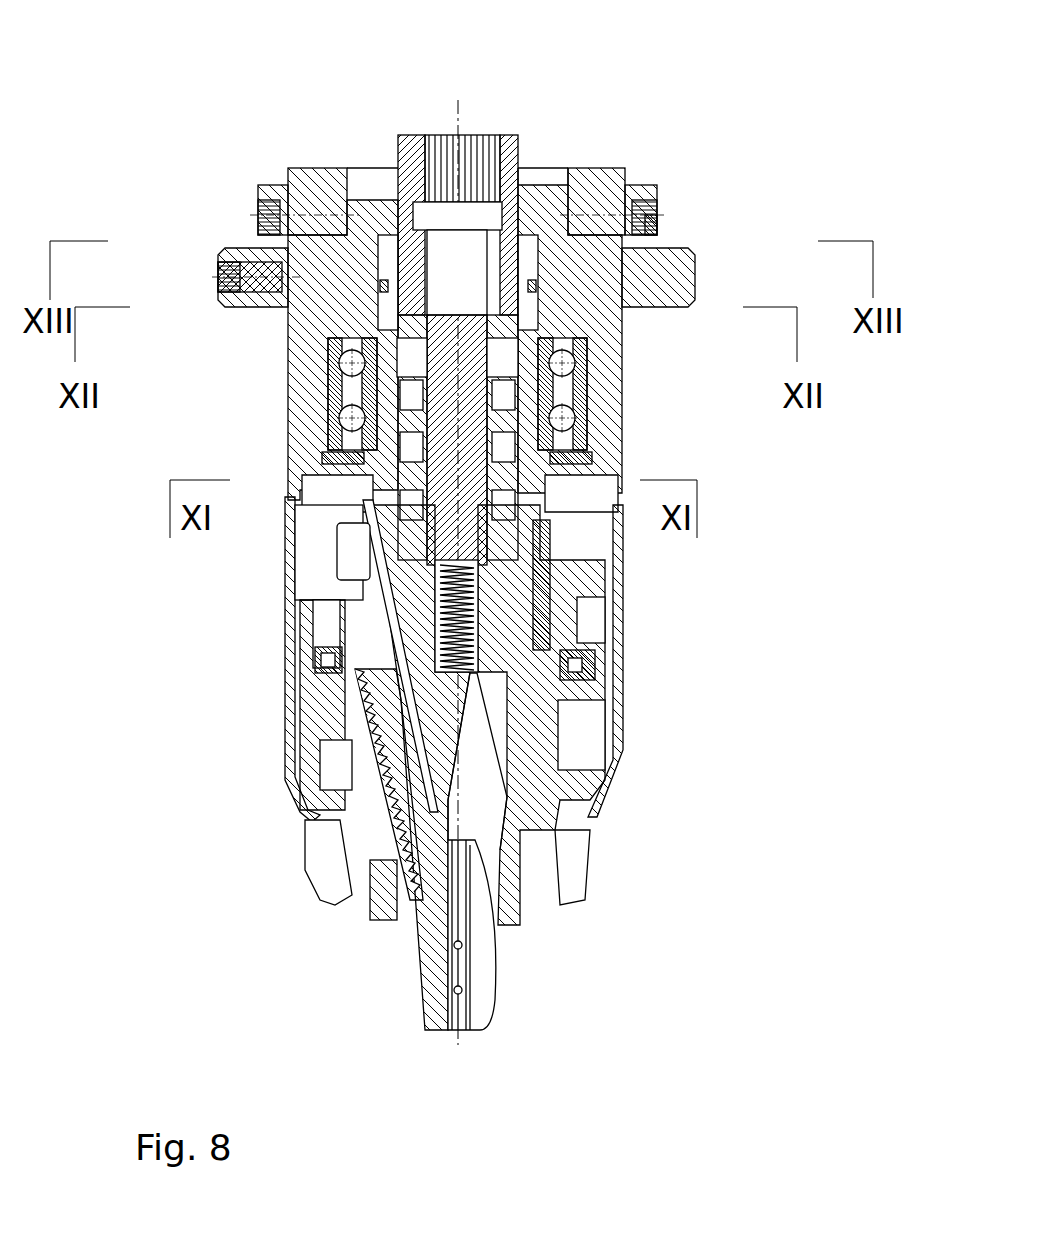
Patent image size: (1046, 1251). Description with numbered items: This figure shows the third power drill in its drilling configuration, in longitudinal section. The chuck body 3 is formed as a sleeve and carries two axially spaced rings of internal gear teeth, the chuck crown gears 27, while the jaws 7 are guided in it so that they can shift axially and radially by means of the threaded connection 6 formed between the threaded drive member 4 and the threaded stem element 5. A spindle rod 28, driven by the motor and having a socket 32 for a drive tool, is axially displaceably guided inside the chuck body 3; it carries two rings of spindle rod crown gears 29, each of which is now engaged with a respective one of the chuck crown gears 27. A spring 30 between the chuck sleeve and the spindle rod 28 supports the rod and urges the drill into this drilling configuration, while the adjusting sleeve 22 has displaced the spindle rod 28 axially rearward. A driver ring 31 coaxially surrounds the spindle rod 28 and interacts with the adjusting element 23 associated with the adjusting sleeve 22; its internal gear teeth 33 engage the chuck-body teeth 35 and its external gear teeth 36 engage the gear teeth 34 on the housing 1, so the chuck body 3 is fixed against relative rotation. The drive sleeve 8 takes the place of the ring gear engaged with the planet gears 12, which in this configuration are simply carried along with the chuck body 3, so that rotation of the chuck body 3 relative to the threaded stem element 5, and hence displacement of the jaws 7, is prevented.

The housing 1 is at (600, 322).
The chuck body 3 is at (385, 545).
The threaded drive member 4 is at (395, 850).
The threaded stem element 5 is at (315, 705).
The threaded connection 6 is at (552, 680).
The jaws 7 is at (427, 960).
The drive sleeve 8 is at (335, 625).
The planet gears 12 is at (565, 610).
The adjusting sleeve 22 is at (673, 260).
The adjusting element 23 is at (305, 205).
The chuck crown gears 27 is at (347, 432).
The spindle rod 28 is at (480, 380).
The spindle rod crown gears 29 is at (413, 480).
The spring 30 is at (470, 657).
The driver ring 31 is at (553, 195).
The socket 32 is at (500, 167).
The internal gear teeth 33 is at (640, 210).
The housing gear teeth 34 is at (668, 230).
The chuck-body teeth 35 is at (262, 225).
The external gear teeth 36 is at (345, 275).